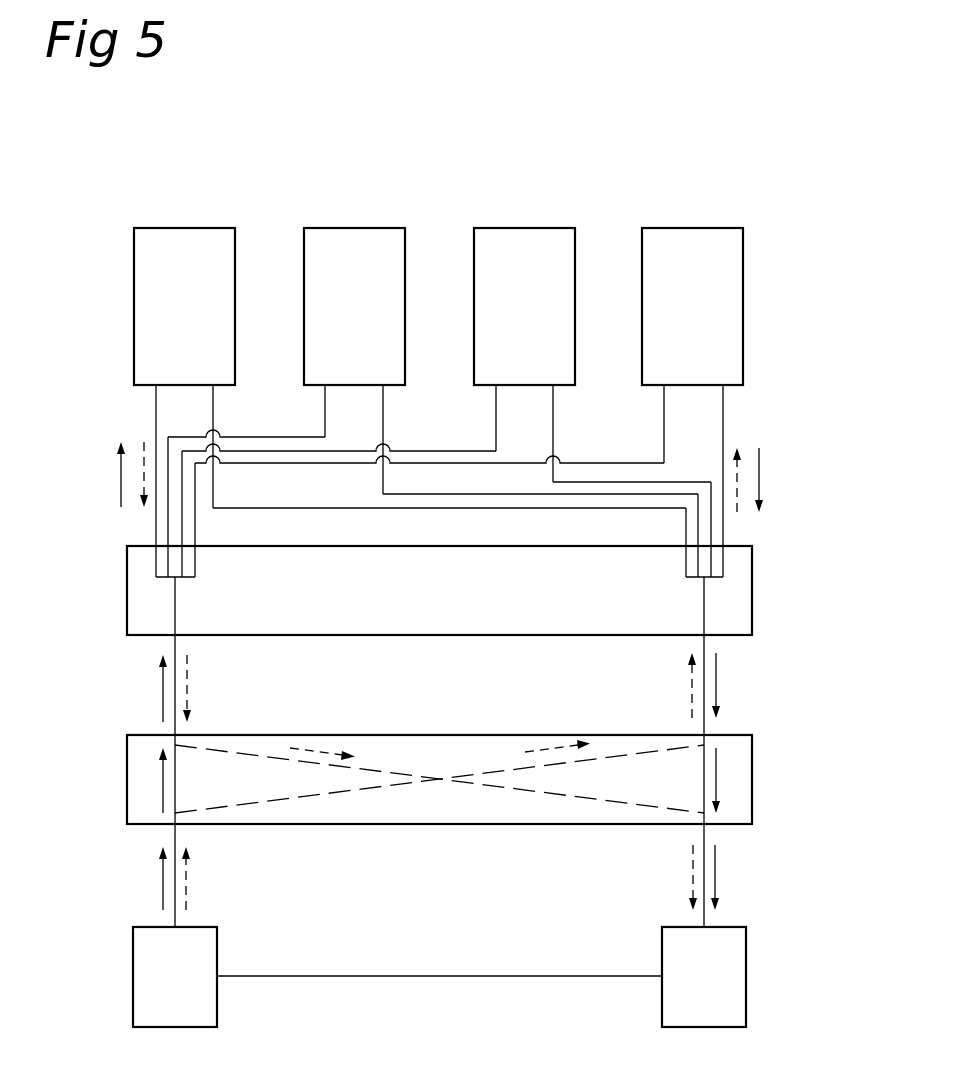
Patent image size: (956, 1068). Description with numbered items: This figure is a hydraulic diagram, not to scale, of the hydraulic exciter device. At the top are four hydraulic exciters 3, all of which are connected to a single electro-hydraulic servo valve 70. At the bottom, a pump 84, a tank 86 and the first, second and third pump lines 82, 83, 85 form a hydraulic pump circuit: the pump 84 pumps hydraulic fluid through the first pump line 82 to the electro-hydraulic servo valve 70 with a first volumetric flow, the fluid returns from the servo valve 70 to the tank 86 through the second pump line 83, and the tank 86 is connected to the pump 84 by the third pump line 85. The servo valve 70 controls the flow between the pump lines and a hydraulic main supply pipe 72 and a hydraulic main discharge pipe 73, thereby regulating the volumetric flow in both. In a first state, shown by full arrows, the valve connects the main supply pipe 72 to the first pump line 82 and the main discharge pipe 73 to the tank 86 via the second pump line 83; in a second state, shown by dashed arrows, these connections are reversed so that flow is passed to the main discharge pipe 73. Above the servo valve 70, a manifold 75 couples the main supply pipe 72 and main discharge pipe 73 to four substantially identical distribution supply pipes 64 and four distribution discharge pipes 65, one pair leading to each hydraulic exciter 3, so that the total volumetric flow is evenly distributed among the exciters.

The hydraulic exciter 3 is at (172, 255).
The distribution supply pipe 64 is at (156, 398).
The distribution discharge pipe 65 is at (213, 398).
The manifold 75 is at (730, 590).
The hydraulic main supply pipe 72 is at (175, 640).
The hydraulic main discharge pipe 73 is at (704, 642).
The electro-hydraulic servo valve 70 is at (740, 768).
The first pump line 82 is at (175, 835).
The second pump line 83 is at (700, 838).
The pump 84 is at (155, 973).
The third pump line 85 is at (448, 976).
The tank 86 is at (724, 957).